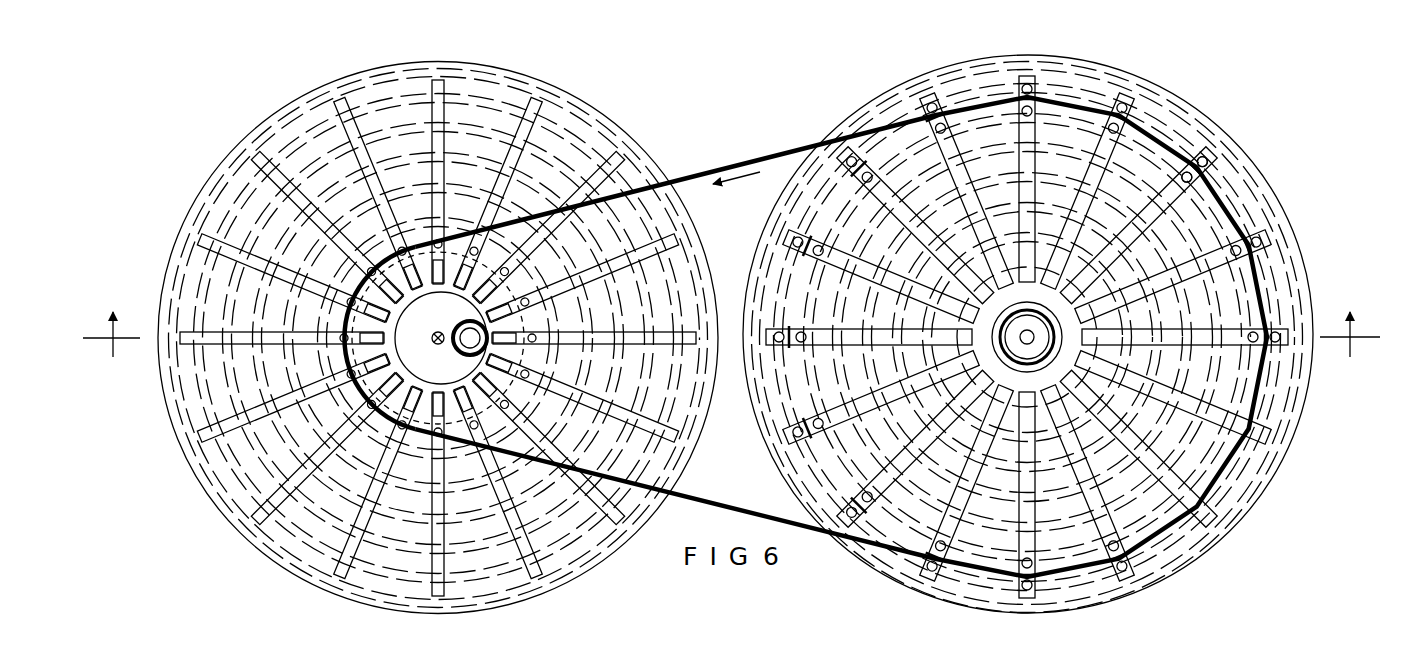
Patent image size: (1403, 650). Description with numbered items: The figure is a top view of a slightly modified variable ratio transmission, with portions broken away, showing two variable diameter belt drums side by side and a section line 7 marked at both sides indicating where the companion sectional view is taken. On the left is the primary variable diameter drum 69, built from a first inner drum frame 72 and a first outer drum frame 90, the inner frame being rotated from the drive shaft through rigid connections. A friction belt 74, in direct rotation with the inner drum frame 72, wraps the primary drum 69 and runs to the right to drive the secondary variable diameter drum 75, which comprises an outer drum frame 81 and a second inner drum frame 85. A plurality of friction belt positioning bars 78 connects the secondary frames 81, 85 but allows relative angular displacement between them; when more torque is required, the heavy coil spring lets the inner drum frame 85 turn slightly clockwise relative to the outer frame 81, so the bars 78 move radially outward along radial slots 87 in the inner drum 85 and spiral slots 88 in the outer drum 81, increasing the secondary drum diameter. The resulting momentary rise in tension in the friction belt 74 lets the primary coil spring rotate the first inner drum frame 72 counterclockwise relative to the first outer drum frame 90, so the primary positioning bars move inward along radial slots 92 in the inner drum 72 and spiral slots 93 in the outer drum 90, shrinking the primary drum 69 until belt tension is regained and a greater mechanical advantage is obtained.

The primary variable diameter drum 69 is at (228, 135).
The first inner drum frame 72 is at (618, 157).
The friction belt 74 is at (736, 168).
The secondary variable diameter drum 75 is at (1292, 198).
The friction belt positioning bars 78 is at (917, 574).
The outer drum frame 81 is at (1278, 274).
The second inner drum frame 85 is at (1282, 244).
The radial slots 87 is at (1212, 165).
The spiral slots 88 is at (1168, 128).
The first outer drum frame 90 is at (651, 161).
The radial slots 92 is at (531, 101).
The spiral slots 93 is at (588, 144).
The section line 7 is at (731, 334).